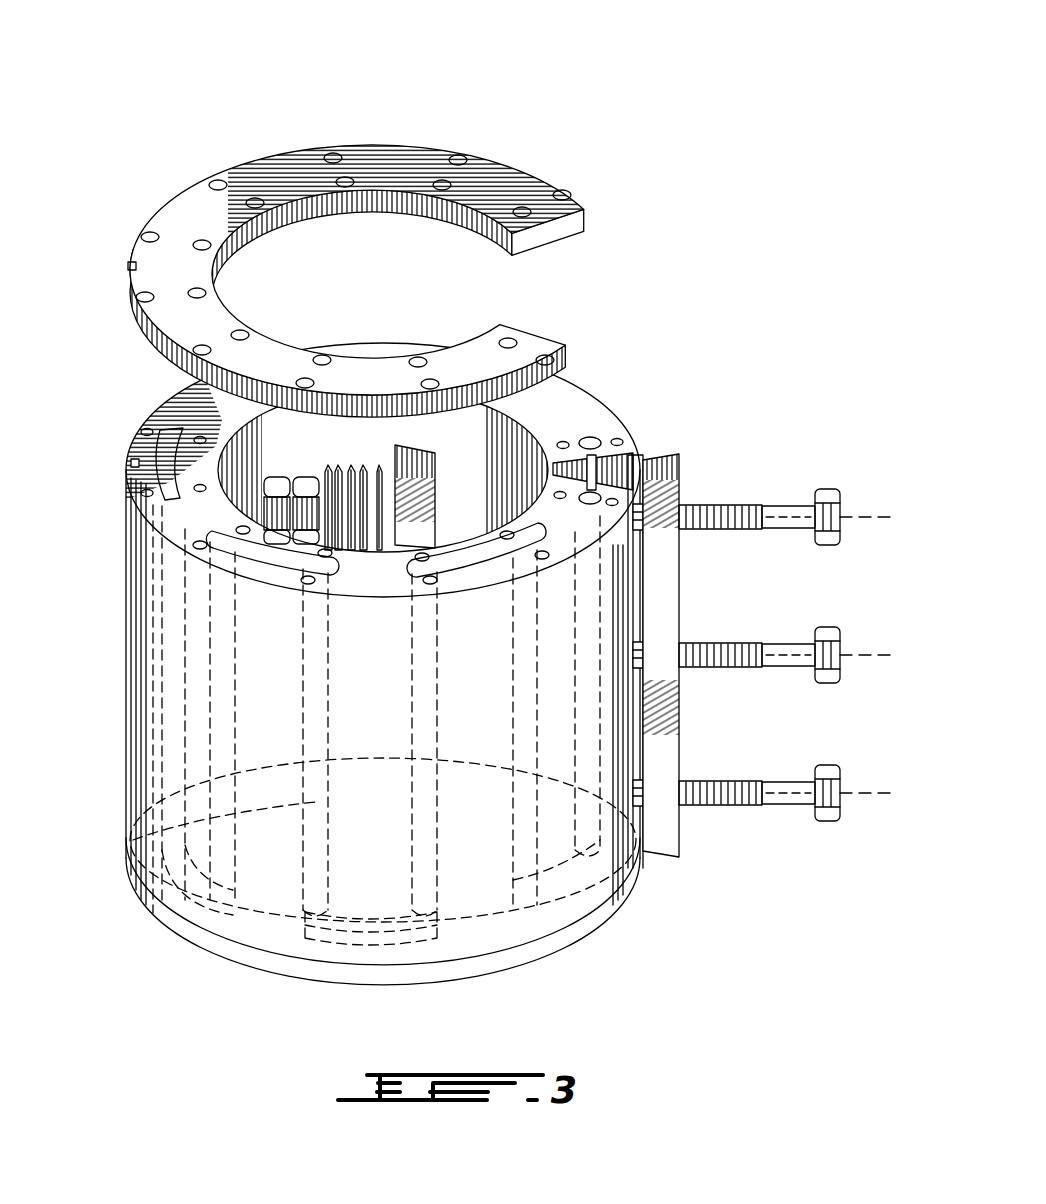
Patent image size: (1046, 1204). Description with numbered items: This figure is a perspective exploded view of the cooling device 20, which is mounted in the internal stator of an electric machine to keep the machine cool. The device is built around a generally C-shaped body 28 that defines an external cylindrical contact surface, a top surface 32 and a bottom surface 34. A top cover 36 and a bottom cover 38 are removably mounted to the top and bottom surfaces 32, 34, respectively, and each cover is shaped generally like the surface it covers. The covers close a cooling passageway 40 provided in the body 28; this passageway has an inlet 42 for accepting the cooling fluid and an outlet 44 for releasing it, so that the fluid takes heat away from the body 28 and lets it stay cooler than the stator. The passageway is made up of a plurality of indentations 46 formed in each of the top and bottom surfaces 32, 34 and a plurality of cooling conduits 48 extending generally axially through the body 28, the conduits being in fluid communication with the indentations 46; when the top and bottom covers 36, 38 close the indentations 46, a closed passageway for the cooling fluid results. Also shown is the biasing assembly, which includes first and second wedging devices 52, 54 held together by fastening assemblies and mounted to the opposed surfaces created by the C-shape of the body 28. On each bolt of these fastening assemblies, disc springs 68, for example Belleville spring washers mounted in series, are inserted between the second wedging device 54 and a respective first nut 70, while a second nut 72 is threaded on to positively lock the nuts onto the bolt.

The cooling device 20 is at (530, 120).
The body 28 is at (574, 398).
The top surface 32 is at (182, 410).
The bottom surface 34 is at (517, 950).
The top cover 36 is at (317, 160).
The bottom cover 38 is at (317, 972).
The cooling passageway 40 is at (300, 866).
The inlet 42 is at (597, 442).
The outlet 44 is at (587, 497).
The indentations 46 is at (160, 425).
The cooling conduits 48 is at (145, 840).
The first wedging device 52 is at (678, 470).
The second wedging device 54 is at (413, 455).
The disc springs 68 is at (377, 466).
The first nut 70 is at (303, 478).
The second nut 72 is at (266, 478).